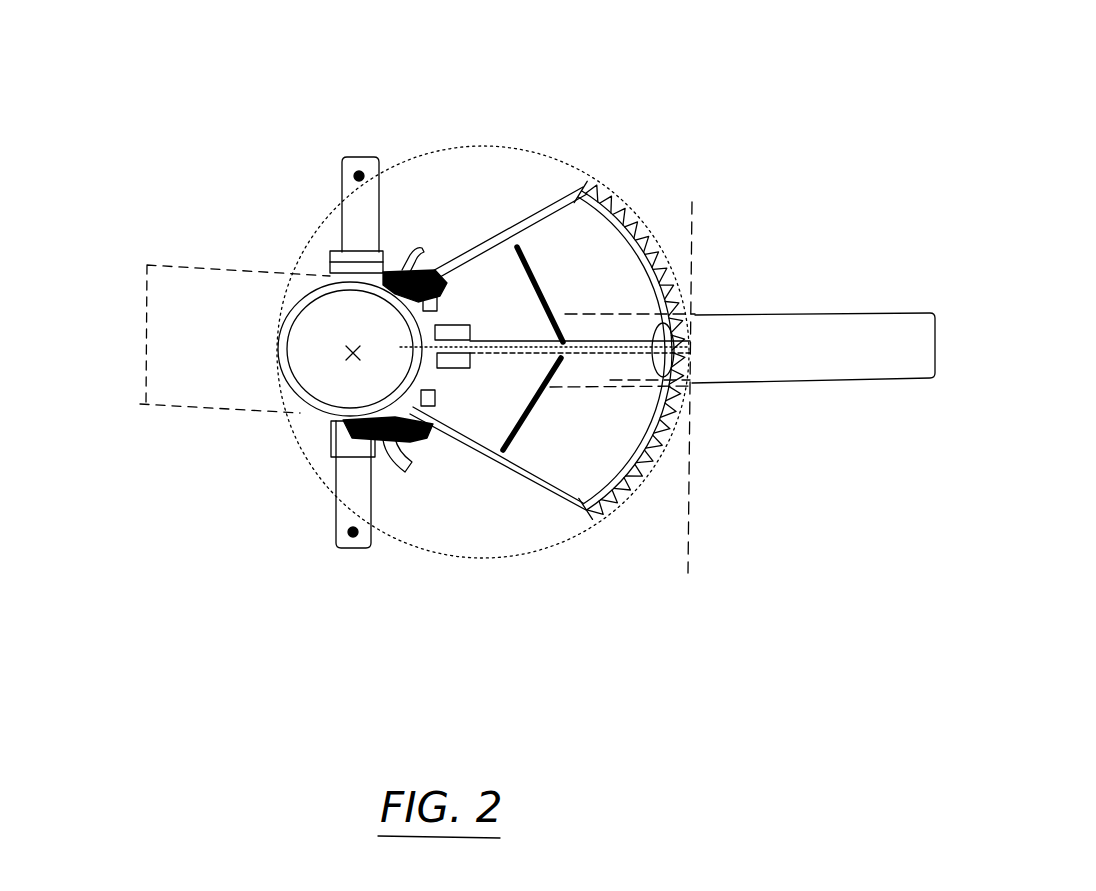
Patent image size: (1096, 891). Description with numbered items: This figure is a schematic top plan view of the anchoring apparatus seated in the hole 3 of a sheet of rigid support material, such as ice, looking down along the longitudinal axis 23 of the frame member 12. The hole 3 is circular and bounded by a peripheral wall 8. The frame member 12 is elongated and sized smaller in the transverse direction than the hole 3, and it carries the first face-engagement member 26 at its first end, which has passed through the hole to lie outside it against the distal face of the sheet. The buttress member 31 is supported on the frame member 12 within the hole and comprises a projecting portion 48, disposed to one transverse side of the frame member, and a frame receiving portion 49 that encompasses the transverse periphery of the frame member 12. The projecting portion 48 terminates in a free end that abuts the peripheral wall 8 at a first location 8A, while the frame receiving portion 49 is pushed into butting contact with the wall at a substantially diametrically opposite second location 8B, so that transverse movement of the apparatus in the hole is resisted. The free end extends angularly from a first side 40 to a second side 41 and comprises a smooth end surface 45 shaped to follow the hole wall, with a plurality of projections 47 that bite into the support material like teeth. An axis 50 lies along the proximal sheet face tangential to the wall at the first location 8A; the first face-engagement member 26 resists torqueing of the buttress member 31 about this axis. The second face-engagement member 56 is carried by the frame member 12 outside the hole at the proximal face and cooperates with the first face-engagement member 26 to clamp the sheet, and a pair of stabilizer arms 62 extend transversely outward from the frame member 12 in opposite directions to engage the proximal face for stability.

The hole 3 is at (546, 147).
The peripheral wall 8 is at (492, 153).
The first location 8A is at (704, 350).
The second location 8B is at (270, 364).
The frame member 12 is at (283, 303).
The longitudinal axis 23 is at (355, 345).
The first face-engagement member 26 is at (194, 254).
The buttress member 31 is at (541, 497).
The first side 40 is at (567, 508).
The second side 41 is at (584, 190).
The end surface 45 is at (618, 507).
The projections 47 is at (631, 496).
The projecting portion 48 is at (557, 417).
The frame receiving portion 49 is at (307, 323).
The axis 50 is at (697, 243).
The second face-engagement member 56 is at (884, 312).
The stabilizer arms 62 is at (380, 194).